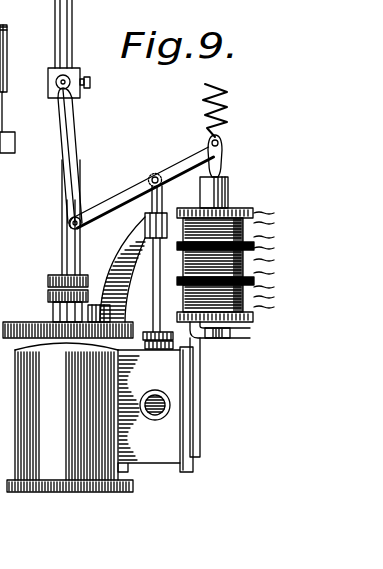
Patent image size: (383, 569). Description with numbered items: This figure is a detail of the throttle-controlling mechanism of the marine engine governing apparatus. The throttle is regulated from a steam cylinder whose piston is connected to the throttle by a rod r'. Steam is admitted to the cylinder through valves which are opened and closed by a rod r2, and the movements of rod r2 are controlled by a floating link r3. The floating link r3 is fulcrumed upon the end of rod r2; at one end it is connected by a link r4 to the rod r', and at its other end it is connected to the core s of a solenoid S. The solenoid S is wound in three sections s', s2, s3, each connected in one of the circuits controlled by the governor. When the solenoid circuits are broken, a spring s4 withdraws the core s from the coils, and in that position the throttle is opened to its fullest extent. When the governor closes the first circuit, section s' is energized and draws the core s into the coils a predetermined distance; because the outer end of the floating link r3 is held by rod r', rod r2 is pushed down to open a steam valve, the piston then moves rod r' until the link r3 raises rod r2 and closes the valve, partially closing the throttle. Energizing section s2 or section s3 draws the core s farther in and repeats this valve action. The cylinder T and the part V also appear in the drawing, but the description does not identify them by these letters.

The valve V is at (10, 89).
The rod r' is at (57, 161).
The rod r2 is at (152, 252).
The floating link r3 is at (130, 183).
The link r4 is at (72, 156).
The core s is at (219, 171).
The solenoid S is at (240, 207).
The solenoid section s' is at (234, 227).
The solenoid section s2 is at (262, 264).
The solenoid section s3 is at (256, 299).
The spring s4 is at (226, 110).
The cylinder T is at (98, 398).